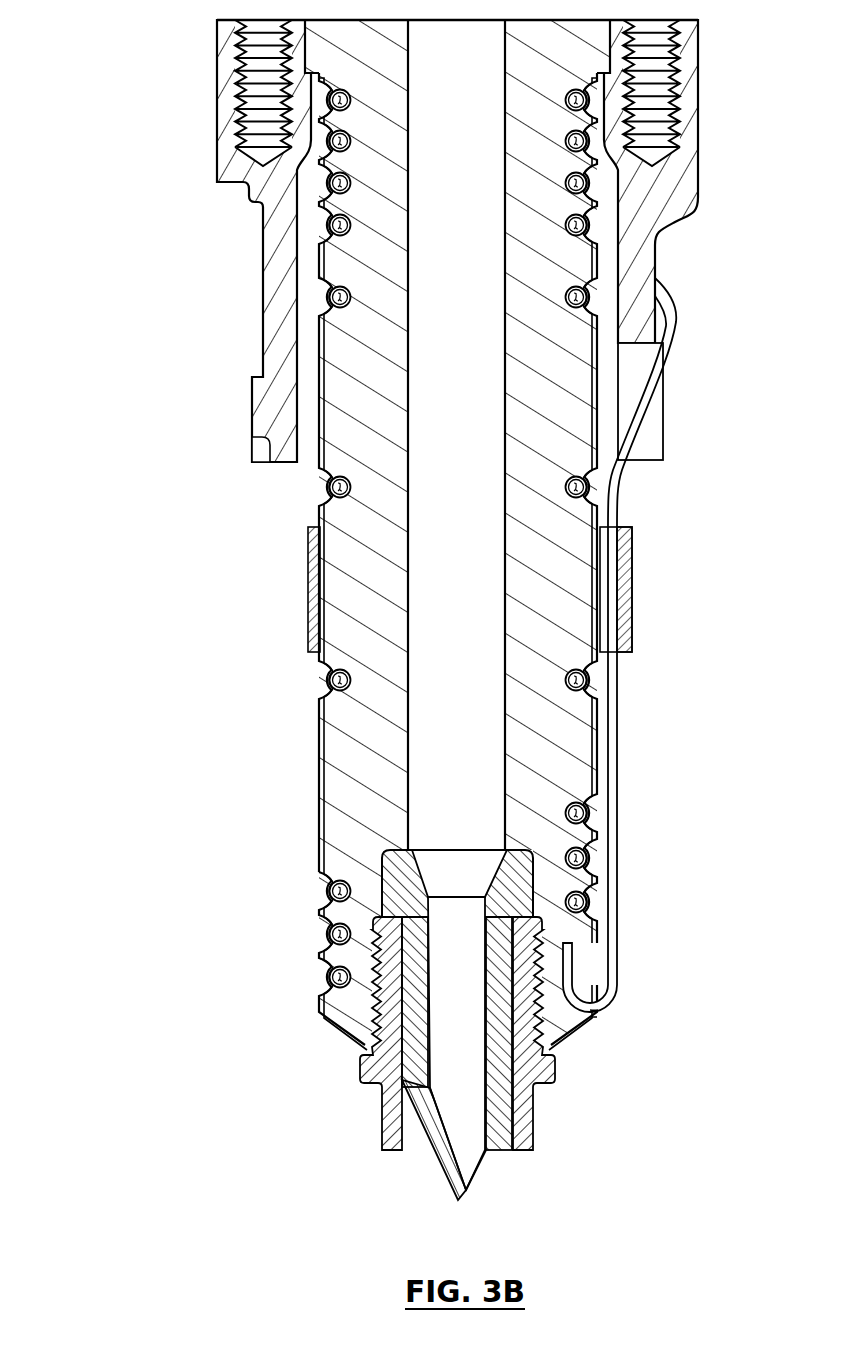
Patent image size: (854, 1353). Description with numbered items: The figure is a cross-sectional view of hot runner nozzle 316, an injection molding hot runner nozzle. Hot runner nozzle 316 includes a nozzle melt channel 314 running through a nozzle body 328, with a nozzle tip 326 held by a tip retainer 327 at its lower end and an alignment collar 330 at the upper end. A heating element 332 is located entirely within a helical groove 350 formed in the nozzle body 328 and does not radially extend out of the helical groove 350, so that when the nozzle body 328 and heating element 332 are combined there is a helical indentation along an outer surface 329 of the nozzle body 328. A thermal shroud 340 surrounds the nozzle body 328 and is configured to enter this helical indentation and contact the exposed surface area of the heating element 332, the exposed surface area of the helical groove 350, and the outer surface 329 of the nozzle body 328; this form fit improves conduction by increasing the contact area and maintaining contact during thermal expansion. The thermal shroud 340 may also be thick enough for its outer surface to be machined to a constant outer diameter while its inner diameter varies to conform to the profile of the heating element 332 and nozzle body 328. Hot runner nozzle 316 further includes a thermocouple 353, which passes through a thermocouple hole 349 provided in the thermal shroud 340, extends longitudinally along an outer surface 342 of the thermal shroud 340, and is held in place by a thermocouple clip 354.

The hot runner nozzle 316 is at (162, 114).
The alignment collar 330 is at (278, 287).
The outer surface of nozzle body 329 is at (318, 517).
The thermocouple clip 354 is at (633, 597).
The thermal shroud 340 is at (322, 715).
The nozzle melt channel 314 is at (430, 726).
The nozzle body 328 is at (355, 780).
The helical groove 350 is at (365, 858).
The heating element 332 is at (330, 983).
The outer surface of thermal shroud 342 is at (606, 742).
The thermocouple 353 is at (613, 968).
The thermocouple hole 349 is at (604, 1012).
The tip retainer 327 is at (380, 1117).
The nozzle tip 326 is at (432, 1168).